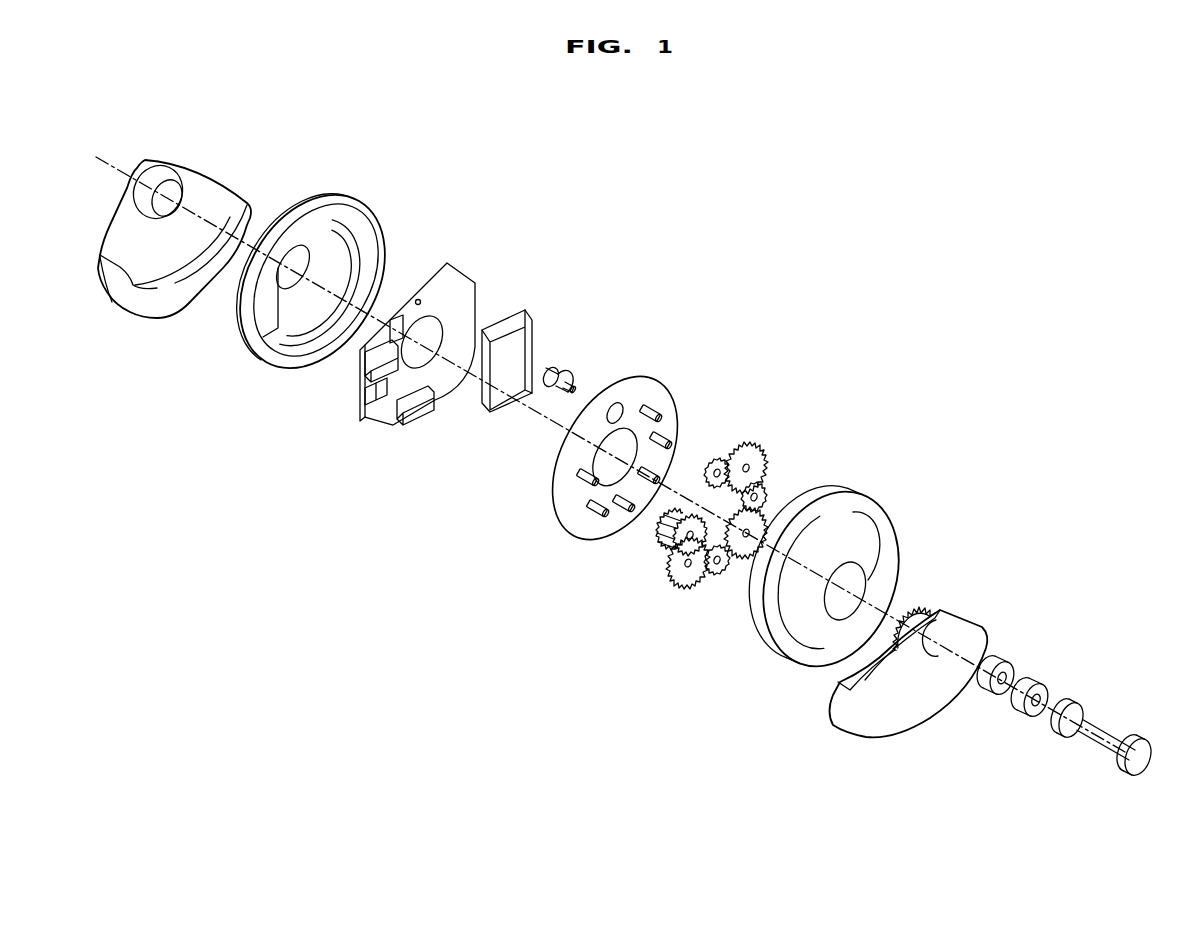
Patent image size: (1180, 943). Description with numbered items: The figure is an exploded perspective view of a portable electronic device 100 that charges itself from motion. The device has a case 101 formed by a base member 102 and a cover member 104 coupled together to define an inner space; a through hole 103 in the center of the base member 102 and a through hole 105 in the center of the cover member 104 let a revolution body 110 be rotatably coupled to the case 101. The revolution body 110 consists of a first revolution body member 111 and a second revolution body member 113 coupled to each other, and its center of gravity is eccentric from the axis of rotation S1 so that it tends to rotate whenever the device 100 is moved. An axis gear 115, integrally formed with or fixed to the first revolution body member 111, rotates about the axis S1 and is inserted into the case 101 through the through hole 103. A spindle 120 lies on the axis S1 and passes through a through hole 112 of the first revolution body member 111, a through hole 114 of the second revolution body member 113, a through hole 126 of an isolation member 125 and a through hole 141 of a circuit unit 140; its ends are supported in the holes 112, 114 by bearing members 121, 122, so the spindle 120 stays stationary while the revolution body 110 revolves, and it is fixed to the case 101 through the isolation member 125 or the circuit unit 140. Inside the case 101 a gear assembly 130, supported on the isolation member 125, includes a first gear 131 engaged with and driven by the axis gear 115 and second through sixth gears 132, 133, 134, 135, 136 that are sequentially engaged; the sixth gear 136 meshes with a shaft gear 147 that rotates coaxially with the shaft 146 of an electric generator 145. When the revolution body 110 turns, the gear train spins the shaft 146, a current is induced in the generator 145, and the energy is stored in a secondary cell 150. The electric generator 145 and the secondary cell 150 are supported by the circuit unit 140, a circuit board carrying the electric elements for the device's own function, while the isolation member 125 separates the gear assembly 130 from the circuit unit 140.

The portable electronic device 100 is at (888, 309).
The axis of rotation S1 is at (104, 160).
The case 101 is at (523, 640).
The base member 102 is at (770, 638).
The through hole 103 is at (850, 573).
The cover member 104 is at (313, 336).
The through hole 105 is at (311, 248).
The revolution body 110 is at (515, 722).
The first revolution body member 111 is at (830, 715).
The through hole 112 is at (940, 633).
The second revolution body member 113 is at (153, 305).
The through hole 114 is at (134, 216).
The axis gear 115 is at (923, 603).
The spindle 120 is at (1100, 732).
The bearing member 121 is at (1043, 688).
The bearing member 122 is at (1007, 660).
The isolation member 125 is at (600, 457).
The through hole 126 is at (603, 463).
The gear assembly 130 is at (836, 414).
The first gear 131 is at (668, 537).
The second gear 132 is at (678, 572).
The third gear 133 is at (707, 570).
The fourth gear 134 is at (757, 523).
The fifth gear 135 is at (759, 492).
The sixth gear 136 is at (757, 457).
The circuit unit 140 is at (431, 340).
The through hole 141 is at (408, 425).
The electric generator 145 is at (563, 370).
The shaft 146 is at (577, 384).
The shaft gear 147 is at (722, 457).
The secondary cell 150 is at (513, 318).